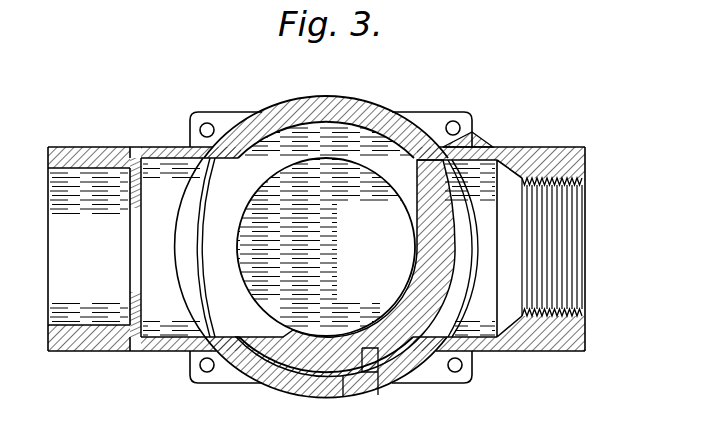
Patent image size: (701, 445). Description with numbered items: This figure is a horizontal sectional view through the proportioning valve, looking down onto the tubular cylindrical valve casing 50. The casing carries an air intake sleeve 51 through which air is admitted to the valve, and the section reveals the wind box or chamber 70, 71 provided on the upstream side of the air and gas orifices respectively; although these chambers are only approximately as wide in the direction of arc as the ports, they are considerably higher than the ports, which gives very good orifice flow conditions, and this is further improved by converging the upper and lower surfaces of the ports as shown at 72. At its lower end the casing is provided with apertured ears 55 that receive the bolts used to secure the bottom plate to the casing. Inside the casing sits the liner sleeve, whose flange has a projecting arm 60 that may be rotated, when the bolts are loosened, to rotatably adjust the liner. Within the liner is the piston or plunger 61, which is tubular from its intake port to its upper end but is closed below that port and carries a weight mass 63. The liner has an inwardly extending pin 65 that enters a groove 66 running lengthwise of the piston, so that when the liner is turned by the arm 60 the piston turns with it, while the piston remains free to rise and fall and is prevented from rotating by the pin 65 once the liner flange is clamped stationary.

The tubular cylindrical valve casing 50 is at (360, 103).
The air intake sleeve 51 is at (104, 147).
The apertured ears 55 is at (462, 120).
The projecting arm 60 is at (473, 134).
The piston or plunger 61 is at (290, 338).
The weight mass 63 is at (374, 293).
The pin 65 is at (373, 396).
The groove 66 is at (340, 396).
The wind box or chamber 70 is at (160, 178).
The wind box or chamber 71 is at (487, 325).
The converging upper and lower port surfaces 72 is at (185, 290).